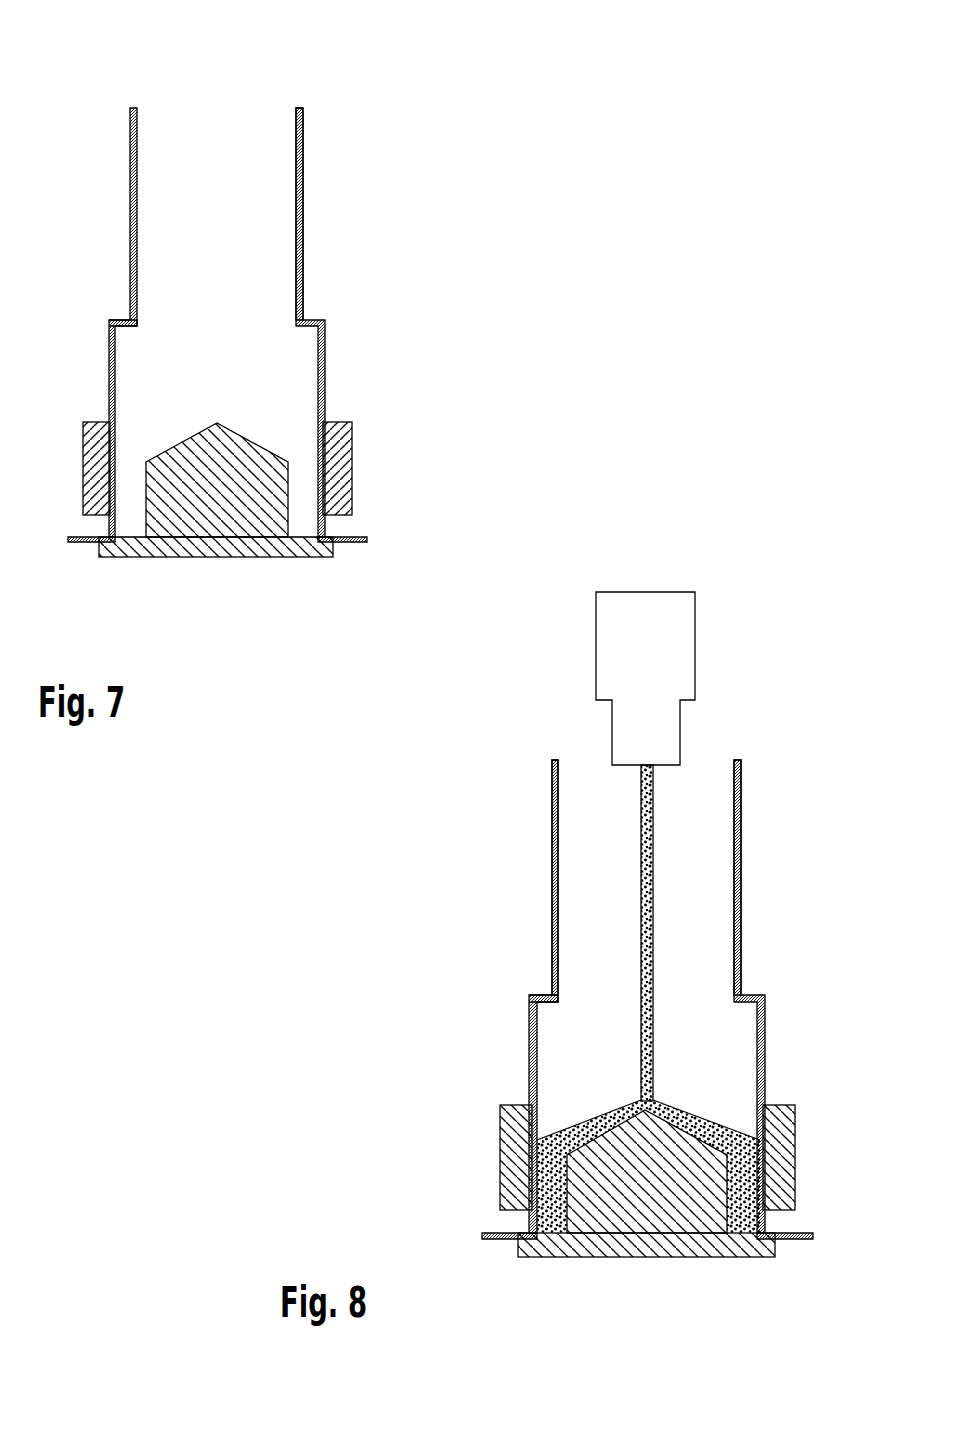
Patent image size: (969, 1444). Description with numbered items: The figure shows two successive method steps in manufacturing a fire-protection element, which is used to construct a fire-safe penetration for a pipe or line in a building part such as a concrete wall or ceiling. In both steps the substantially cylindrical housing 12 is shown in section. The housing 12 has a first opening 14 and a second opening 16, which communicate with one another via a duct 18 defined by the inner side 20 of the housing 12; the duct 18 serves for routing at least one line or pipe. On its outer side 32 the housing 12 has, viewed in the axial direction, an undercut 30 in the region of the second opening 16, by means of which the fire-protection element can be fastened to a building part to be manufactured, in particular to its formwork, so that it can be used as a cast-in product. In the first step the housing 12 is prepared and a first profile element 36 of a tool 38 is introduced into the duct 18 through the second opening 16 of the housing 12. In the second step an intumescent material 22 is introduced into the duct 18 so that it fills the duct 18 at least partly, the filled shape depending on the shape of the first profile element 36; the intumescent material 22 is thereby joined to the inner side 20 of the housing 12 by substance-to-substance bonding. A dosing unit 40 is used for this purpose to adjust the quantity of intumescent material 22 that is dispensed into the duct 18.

In FIG. 7, the housing 12 is at (303, 222).
In FIG. 8, the housing 12 is at (552, 848).
In FIG. 7, the first opening 14 is at (177, 118).
In FIG. 8, the first opening 14 is at (717, 772).
In FIG. 7, the second opening 16 is at (126, 549).
In FIG. 8, the second opening 16 is at (683, 1249).
In FIG. 7, the duct 18 is at (270, 288).
In FIG. 8, the duct 18 is at (715, 880).
In FIG. 7, the inner side 20 is at (138, 306).
In FIG. 8, the inner side 20 is at (561, 942).
In FIG. 8, the intumescent material 22 is at (655, 1037).
In FIG. 7, the undercut 30 is at (335, 531).
In FIG. 8, the undercut 30 is at (521, 1225).
In FIG. 7, the outer side 32 is at (328, 376).
In FIG. 8, the outer side 32 is at (744, 922).
In FIG. 7, the first profile element 36 is at (248, 543).
In FIG. 8, the first profile element 36 is at (603, 1235).
In FIG. 7, the tool 38 is at (313, 574).
In FIG. 8, the dosing unit 40 is at (618, 604).